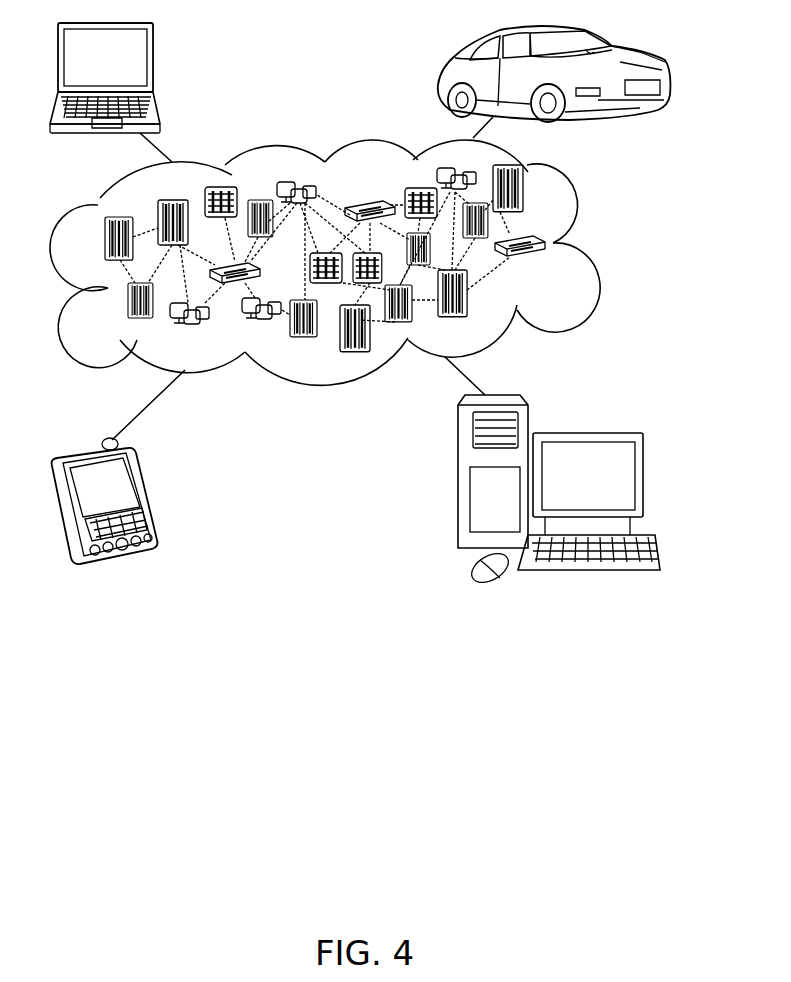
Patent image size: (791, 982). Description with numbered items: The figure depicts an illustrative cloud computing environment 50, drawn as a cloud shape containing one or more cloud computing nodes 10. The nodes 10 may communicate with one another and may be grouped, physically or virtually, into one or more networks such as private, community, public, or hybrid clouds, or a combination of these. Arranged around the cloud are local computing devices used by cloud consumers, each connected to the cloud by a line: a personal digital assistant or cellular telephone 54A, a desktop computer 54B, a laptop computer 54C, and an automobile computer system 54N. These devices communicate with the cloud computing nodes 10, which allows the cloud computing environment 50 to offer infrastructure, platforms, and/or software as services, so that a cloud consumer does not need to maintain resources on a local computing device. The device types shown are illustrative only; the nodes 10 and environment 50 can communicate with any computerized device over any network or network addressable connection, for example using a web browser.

The cloud computing node 10 is at (552, 265).
The cloud computing environment 50 is at (338, 262).
The personal digital assistant or cellular telephone 54A is at (146, 496).
The desktop computer 54B is at (588, 433).
The laptop computer 54C is at (157, 63).
The automobile computer system 54N is at (440, 79).